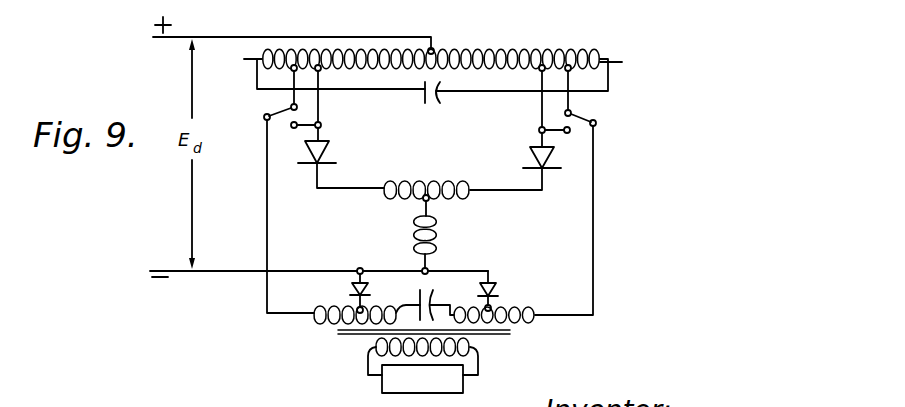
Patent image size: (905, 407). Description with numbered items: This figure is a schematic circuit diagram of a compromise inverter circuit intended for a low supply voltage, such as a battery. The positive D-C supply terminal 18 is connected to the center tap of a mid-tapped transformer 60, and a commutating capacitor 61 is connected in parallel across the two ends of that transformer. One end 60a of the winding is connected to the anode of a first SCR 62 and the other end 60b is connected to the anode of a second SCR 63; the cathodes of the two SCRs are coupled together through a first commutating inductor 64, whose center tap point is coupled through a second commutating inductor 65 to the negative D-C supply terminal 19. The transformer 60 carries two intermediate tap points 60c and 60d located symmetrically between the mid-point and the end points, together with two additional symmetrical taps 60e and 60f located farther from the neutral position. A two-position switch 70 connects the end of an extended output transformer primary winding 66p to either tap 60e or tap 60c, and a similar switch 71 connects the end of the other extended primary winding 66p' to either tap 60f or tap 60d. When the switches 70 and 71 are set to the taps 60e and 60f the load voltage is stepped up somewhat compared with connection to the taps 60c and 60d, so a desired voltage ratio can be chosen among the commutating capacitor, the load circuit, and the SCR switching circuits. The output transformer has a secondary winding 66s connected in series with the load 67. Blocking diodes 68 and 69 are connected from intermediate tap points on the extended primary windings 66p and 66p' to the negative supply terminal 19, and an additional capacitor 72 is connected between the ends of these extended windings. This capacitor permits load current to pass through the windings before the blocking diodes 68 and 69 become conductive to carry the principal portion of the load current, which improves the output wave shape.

The positive D-C supply terminal 18 is at (232, 31).
The negative D-C supply terminal 19 is at (229, 272).
The mid-tapped transformer 60 is at (468, 50).
The one end of the winding of transformer 60a is at (236, 60).
The other end of the transformer 60b is at (629, 62).
The intermediate tap point 60c is at (321, 70).
The intermediate tap point 60d is at (541, 72).
The additional symmetrical tap 60e is at (291, 70).
The additional symmetrical tap 60f is at (570, 72).
The commutating capacitor 61 is at (423, 92).
The first SCR 62 is at (328, 148).
The second SCR 63 is at (531, 149).
The first commutating inductor 64 is at (437, 183).
The second commutating inductor 65 is at (434, 226).
The primary winding of output transformer 66p is at (352, 302).
The second output transformer primary winding 66p' is at (508, 302).
The secondary winding 66s is at (480, 348).
The load 67 is at (381, 386).
The blocking diode 68 is at (371, 289).
The blocking diode 69 is at (496, 284).
The two-position switch 70 is at (272, 111).
The switch 71 is at (585, 117).
The additional capacitor 72 is at (441, 300).